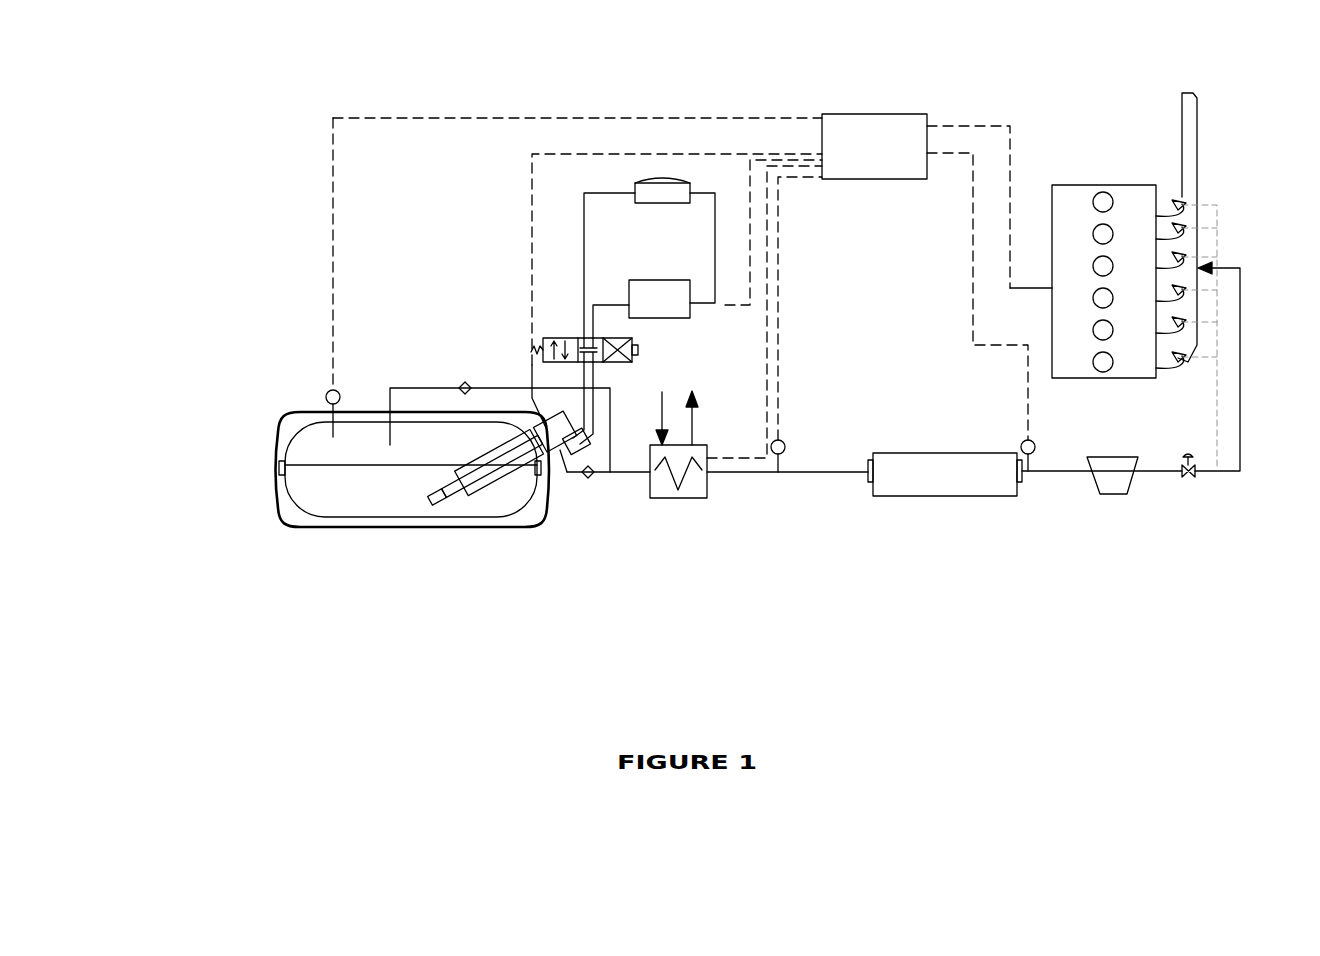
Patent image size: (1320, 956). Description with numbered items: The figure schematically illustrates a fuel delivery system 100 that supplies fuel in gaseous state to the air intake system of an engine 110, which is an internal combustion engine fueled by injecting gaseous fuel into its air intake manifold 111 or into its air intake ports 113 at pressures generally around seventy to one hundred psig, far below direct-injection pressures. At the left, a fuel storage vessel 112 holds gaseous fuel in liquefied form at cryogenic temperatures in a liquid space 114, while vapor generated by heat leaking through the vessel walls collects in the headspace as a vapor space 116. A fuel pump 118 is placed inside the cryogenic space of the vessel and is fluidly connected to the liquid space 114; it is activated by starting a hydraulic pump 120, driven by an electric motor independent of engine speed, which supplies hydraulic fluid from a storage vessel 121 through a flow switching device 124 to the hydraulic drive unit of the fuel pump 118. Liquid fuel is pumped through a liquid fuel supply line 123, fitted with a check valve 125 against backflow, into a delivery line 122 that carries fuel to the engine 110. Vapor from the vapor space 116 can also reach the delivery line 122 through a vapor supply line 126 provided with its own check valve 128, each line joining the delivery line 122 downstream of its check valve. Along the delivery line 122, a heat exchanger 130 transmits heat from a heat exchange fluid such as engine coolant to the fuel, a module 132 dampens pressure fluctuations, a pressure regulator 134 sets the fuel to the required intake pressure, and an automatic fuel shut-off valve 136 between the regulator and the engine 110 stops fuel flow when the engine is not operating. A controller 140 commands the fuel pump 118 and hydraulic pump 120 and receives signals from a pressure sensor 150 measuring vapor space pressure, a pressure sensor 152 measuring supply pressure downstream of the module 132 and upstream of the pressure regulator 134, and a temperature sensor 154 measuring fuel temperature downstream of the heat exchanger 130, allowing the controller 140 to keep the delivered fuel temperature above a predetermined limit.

The fuel delivery system 100 is at (236, 122).
The engine 110 is at (1116, 176).
The air intake manifold 111 is at (1192, 150).
The fuel storage vessel 112 is at (287, 413).
The air intake ports 113 is at (1167, 362).
The liquid space 114 is at (327, 492).
The vapor space 116 is at (357, 447).
The fuel pump 118 is at (455, 490).
The hydraulic pump 120 is at (678, 312).
The storage vessel 121 is at (676, 178).
The delivery line 122 is at (828, 476).
The liquid fuel supply line 123 is at (566, 480).
The flow switching device 124 is at (573, 337).
The check valve 125 is at (594, 474).
The vapor supply line 126 is at (425, 386).
The check valve 128 is at (469, 383).
The heat exchanger 130 is at (708, 487).
The module 132 is at (942, 477).
The pressure regulator 134 is at (1118, 487).
The automatic fuel shut-off valve 136 is at (1191, 480).
The controller 140 is at (888, 124).
The pressure sensor 150 is at (327, 392).
The pressure sensor 152 is at (1036, 445).
The temperature sensor 154 is at (785, 443).